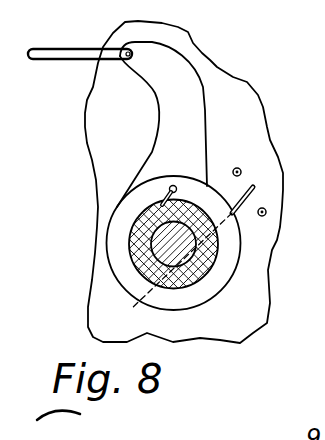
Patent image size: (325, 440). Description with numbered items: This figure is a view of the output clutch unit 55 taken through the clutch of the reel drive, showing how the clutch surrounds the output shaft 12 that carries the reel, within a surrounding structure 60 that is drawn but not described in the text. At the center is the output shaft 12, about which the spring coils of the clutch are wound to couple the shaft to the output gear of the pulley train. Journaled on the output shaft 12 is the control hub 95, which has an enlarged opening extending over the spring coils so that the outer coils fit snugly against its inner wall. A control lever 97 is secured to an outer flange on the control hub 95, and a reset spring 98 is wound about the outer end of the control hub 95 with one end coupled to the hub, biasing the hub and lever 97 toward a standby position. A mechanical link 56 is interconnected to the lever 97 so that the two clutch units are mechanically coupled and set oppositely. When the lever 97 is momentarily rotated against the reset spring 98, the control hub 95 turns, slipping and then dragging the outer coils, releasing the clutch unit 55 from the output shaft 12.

The output shaft 12 is at (160, 248).
The output clutch unit 55 is at (205, 296).
The mechanical link 56 is at (78, 24).
The mounting block 60 is at (252, 122).
The control hub 95 is at (139, 232).
The control lever 97 is at (180, 62).
The reset spring 98 is at (177, 258).